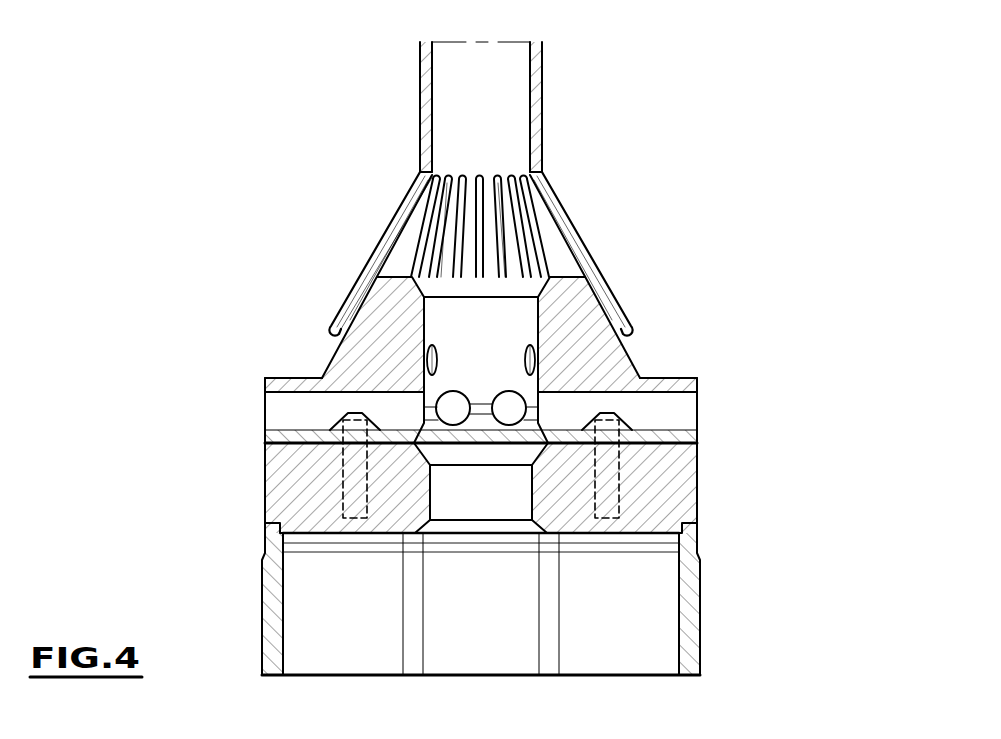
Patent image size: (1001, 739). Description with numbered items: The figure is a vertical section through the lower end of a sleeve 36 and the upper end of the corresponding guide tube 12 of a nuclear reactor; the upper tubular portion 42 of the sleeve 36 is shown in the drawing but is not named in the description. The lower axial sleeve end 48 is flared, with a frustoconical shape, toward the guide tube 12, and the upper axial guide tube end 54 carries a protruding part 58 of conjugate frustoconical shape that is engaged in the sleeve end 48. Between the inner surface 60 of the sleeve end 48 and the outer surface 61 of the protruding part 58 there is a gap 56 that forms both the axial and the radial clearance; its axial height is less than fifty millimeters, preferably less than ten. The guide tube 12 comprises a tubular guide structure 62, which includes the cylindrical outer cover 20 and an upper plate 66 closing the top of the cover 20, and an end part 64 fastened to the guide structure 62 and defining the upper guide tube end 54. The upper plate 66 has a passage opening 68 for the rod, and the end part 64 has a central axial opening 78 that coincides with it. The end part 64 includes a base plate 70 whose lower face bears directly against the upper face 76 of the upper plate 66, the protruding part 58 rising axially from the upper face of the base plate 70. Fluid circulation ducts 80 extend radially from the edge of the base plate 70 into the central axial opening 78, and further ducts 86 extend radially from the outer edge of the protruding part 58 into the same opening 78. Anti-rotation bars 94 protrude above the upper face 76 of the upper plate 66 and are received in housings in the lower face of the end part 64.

The guide tube 12 is at (208, 590).
The cylindrical outer cover 20 is at (690, 612).
The sleeve 36 is at (386, 88).
The outlet tube 42 is at (535, 83).
The lower axial sleeve end 48 is at (408, 205).
The upper axial guide tube end 54 is at (822, 384).
The gap 56 is at (603, 276).
The protruding part 58 is at (650, 407).
The inner surface 60 is at (422, 236).
The outer surface 61 is at (607, 353).
The tubular guide structure 62 is at (726, 518).
The end part 64 is at (700, 353).
The upper plate 66 is at (280, 493).
The passage opening 68 is at (452, 497).
The base plate 70 is at (678, 385).
The upper face 76 is at (265, 422).
The central axial opening 78 is at (400, 322).
The ducts 80 is at (428, 407).
The ducts 86 is at (427, 360).
The anti-rotation bars 94 is at (355, 467).